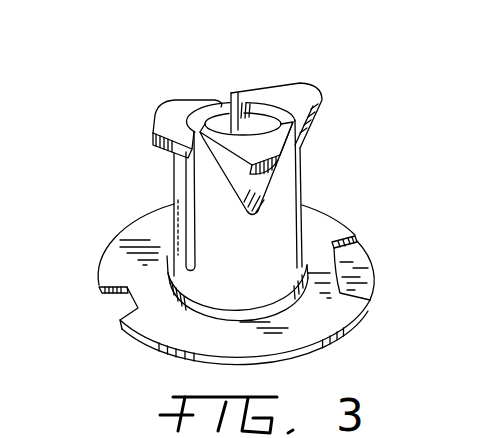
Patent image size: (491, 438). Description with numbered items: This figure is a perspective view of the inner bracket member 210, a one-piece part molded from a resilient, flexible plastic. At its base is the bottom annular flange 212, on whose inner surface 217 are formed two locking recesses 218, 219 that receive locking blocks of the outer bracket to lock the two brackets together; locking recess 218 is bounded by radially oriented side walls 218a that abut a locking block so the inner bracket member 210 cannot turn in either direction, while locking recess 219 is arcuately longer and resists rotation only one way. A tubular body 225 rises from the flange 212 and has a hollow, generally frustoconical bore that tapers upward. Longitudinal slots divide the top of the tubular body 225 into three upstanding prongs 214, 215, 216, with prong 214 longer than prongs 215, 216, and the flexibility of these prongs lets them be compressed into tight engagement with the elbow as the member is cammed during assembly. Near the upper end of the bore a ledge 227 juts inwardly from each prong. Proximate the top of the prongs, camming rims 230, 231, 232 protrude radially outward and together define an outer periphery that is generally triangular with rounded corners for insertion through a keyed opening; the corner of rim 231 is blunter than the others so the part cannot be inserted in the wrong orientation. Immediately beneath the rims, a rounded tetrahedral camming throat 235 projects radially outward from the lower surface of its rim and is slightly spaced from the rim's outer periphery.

The inner bracket member 210 is at (338, 126).
The bottom annular flange 212 is at (139, 237).
The prong 214 is at (288, 195).
The prong 215 is at (176, 181).
The prong 216 is at (247, 103).
The inner surface 217 is at (163, 327).
The locking recess 218 is at (120, 308).
The radially oriented side walls 218a is at (99, 295).
The locking recess 219 is at (352, 268).
The tubular body 225 is at (270, 285).
The ledge 227 is at (230, 117).
The camming rim 230 is at (273, 152).
The camming rim 231 is at (171, 117).
The camming rim 232 is at (303, 95).
The camming throat 235 is at (274, 197).